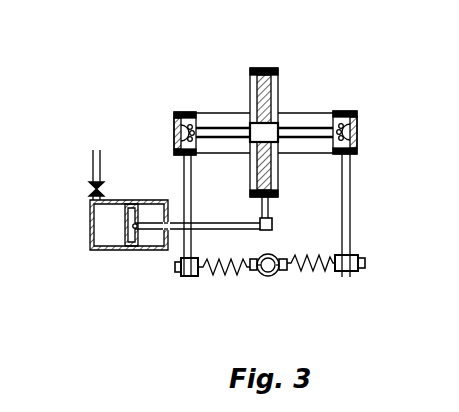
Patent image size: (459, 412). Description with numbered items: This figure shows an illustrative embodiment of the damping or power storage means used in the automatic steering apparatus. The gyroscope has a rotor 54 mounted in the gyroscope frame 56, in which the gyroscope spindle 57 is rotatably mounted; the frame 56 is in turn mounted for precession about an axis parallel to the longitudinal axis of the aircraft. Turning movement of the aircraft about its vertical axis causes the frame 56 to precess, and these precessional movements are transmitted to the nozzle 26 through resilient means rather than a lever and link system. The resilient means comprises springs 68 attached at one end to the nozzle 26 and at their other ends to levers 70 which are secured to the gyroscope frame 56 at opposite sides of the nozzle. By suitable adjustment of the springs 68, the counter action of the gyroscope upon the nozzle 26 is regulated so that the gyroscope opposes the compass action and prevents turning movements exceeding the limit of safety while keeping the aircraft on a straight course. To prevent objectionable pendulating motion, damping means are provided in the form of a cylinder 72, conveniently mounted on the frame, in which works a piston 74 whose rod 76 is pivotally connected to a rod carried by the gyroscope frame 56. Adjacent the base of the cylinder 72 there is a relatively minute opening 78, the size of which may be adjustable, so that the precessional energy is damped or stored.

The nozzle 26 is at (268, 265).
The rotor 54 is at (277, 72).
The gyroscope frame 56 is at (357, 152).
The gyroscope spindle 57 is at (292, 128).
The springs 68 is at (222, 275).
The levers 70 is at (186, 277).
The cylinder 72 is at (155, 250).
The piston 74 is at (127, 250).
The piston rod 76 is at (172, 221).
The minute opening 78 is at (93, 185).